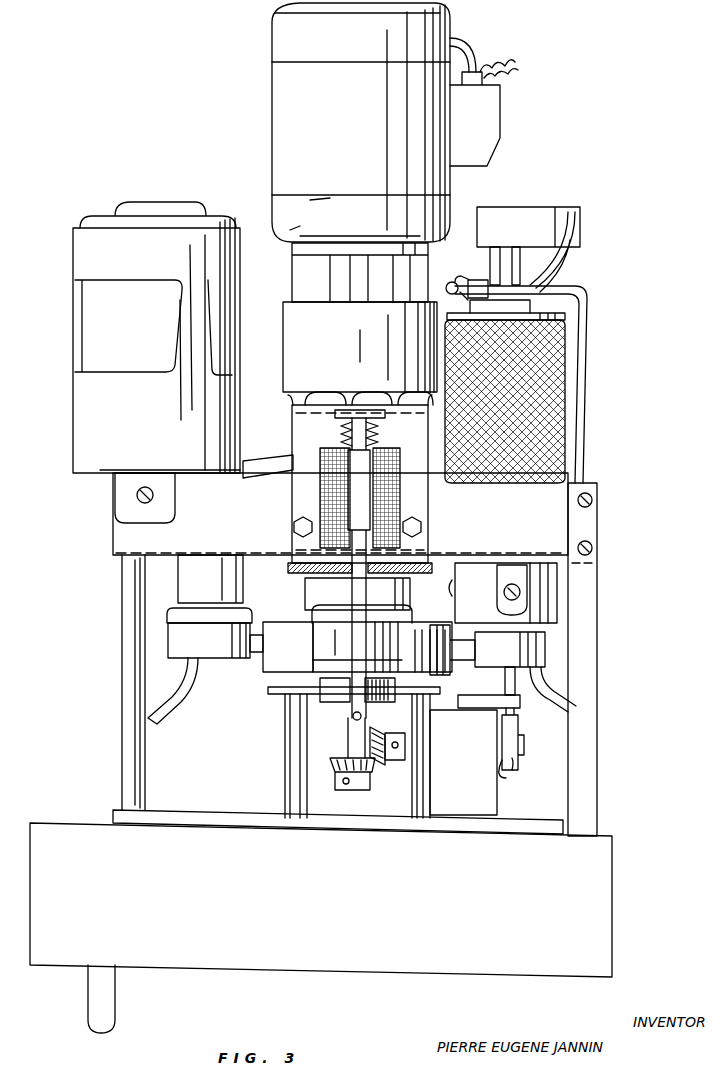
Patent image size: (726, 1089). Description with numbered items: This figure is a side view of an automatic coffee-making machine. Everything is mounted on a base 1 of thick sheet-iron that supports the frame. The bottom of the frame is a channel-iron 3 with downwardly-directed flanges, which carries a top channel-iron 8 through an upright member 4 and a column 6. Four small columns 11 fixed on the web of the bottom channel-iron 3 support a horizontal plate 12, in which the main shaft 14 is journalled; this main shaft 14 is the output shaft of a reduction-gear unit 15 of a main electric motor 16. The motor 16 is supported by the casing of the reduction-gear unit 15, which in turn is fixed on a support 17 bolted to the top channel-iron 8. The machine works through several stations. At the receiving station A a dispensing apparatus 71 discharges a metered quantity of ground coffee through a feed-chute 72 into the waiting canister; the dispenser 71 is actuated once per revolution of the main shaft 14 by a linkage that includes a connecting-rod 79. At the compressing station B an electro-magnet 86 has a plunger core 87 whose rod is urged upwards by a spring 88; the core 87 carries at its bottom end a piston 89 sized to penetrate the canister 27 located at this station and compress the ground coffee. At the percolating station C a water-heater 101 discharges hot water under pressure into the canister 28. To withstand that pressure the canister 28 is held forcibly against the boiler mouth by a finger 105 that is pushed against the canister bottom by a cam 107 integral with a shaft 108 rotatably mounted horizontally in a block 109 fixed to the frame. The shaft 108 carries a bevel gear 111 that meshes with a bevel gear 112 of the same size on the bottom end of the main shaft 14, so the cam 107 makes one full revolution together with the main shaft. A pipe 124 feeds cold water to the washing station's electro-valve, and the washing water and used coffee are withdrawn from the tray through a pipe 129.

The base 1 is at (621, 871).
The channel-iron 3 is at (205, 808).
The upright member 4 is at (590, 700).
The column 6 is at (122, 618).
The top channel-iron 8 is at (222, 532).
The small columns 11 is at (300, 717).
The horizontal plate 12 is at (276, 689).
The main shaft 14 is at (350, 742).
The reduction-gear unit 15 is at (368, 352).
The main electric motor 16 is at (359, 165).
The support 17 is at (300, 430).
The canister 27 is at (315, 646).
The canister 28 is at (547, 650).
The dispensing apparatus 71 is at (170, 271).
The feed-chute 72 is at (219, 596).
The connecting-rod 79 is at (270, 462).
The electro-magnet 86 is at (395, 500).
The plunger core 87 is at (345, 445).
The spring 88 is at (383, 432).
The piston 89 is at (330, 608).
The water-heater 101 is at (522, 401).
The finger 105 is at (505, 675).
The cam 107 is at (516, 727).
The shaft 108 is at (538, 760).
The block 109 is at (476, 764).
The bevel gear 111 is at (380, 762).
The bevel gear 112 is at (338, 758).
The pipe 124 is at (583, 393).
The pipe 129 is at (108, 992).
The station for receiving ground coffee A is at (215, 652).
The compressing station B is at (361, 654).
The percolating station C is at (517, 659).